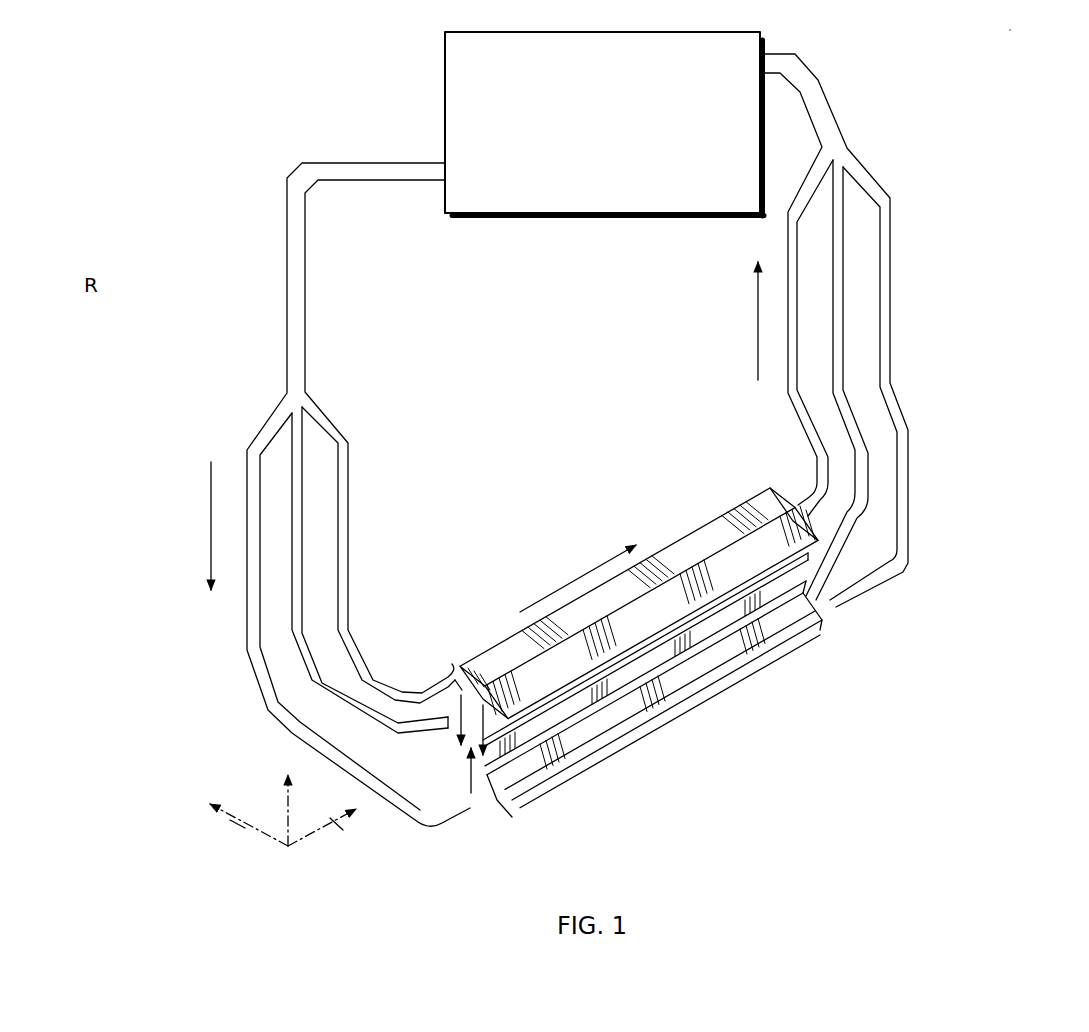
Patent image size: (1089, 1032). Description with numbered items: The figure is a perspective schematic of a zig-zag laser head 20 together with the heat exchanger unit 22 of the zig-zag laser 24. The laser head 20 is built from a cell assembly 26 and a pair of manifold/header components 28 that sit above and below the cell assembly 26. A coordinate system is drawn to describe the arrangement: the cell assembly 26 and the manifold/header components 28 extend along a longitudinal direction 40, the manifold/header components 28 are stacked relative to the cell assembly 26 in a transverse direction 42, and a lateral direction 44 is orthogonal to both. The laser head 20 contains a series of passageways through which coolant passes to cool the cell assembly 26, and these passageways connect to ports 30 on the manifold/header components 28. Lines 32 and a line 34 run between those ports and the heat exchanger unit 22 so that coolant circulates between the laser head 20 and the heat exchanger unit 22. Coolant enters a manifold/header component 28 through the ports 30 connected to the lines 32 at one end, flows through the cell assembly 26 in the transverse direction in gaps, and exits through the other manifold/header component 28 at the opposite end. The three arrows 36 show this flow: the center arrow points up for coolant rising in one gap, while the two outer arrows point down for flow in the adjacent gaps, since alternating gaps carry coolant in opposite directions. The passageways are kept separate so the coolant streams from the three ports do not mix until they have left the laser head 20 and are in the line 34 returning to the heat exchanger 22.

The zig-zag laser head 20 is at (667, 750).
The heat exchanger unit 22 is at (604, 124).
The zig-zag laser 24 is at (922, 74).
The cell assembly 26 is at (773, 593).
The manifold/header components 28 is at (745, 513).
The ports 30 is at (460, 668).
The lines 32 is at (297, 316).
The line 34 is at (888, 303).
The arrows 36 is at (485, 794).
The longitudinal direction 40 is at (337, 825).
The transverse direction 42 is at (287, 793).
The lateral direction 44 is at (240, 822).